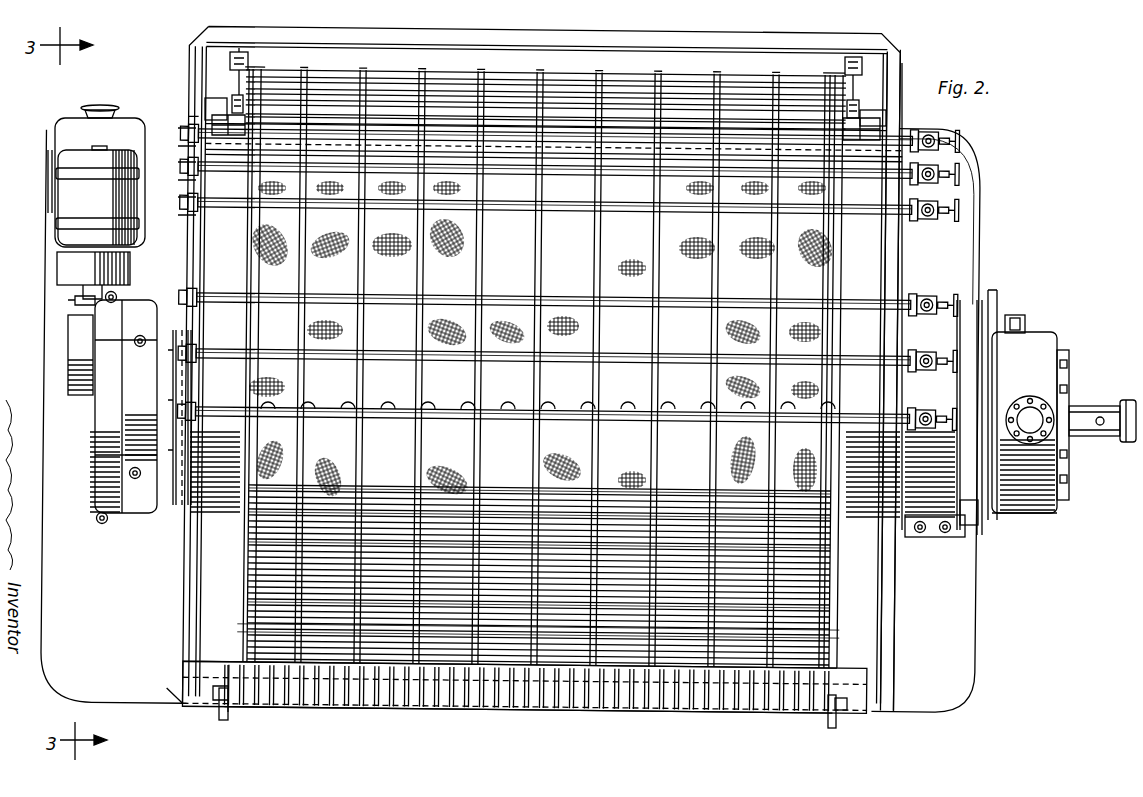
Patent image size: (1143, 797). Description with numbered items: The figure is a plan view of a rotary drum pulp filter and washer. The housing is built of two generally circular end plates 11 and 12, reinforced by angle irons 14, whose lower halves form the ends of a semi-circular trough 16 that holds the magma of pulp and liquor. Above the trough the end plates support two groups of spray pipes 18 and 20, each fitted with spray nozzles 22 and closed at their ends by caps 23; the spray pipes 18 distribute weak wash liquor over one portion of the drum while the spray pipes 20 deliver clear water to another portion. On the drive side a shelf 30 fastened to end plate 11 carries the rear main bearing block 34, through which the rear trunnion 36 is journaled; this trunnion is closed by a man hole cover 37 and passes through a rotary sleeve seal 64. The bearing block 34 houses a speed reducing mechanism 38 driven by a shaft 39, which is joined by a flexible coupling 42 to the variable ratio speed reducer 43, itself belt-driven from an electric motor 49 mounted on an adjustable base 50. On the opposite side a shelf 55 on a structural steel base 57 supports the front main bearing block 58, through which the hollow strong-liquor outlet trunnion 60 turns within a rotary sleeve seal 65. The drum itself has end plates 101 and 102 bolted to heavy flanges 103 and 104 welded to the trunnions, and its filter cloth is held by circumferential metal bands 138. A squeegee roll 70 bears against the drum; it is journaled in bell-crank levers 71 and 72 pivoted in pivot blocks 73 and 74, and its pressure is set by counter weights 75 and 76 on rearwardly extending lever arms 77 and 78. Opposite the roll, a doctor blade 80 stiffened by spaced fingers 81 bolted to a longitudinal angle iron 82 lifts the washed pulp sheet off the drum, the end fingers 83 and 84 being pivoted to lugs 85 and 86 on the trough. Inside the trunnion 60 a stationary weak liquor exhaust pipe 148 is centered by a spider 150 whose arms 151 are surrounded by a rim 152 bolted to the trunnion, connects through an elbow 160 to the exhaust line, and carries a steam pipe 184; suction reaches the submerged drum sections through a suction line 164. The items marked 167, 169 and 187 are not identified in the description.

The end plate 11 is at (192, 583).
The end plate 12 is at (870, 605).
The angle irons 14 is at (182, 568).
The trough 16 is at (222, 537).
The spray pipes 18 is at (645, 140).
The spray pipes 20 is at (683, 410).
The spray nozzles 22 is at (428, 406).
The caps 23 is at (185, 205).
The shelf 30 is at (60, 408).
The rear main bearing block 34 is at (108, 455).
The man hole cover 37 is at (95, 432).
The rear trunnion 36 is at (215, 470).
The speed reducing mechanism 38 is at (78, 335).
The shaft 39 is at (74, 300).
The flexible coupling 42 is at (52, 276).
The variable ratio speed reducer 43 is at (52, 140).
The electric motor 49 is at (72, 194).
The adjustable base 50 is at (65, 128).
The shelf 55 is at (965, 540).
The structural steel base 57 is at (960, 665).
The front main bearing block 58 is at (950, 330).
The strong-liquor outlet trunnion 60 is at (1030, 396).
The rotary sleeve seal 64 is at (158, 526).
The rotary sleeve seal 65 is at (903, 537).
The squeegee roll 70 is at (546, 98).
The bell-crank lever 71 is at (845, 108).
The bell-crank lever 72 is at (242, 108).
The pivot block 73 is at (874, 112).
The pivot block 74 is at (215, 100).
The counter weight 75 is at (848, 58).
The counter weight 76 is at (248, 56).
The lever arm 77 is at (840, 80).
The lever arm 78 is at (232, 80).
The doctor blade 80 is at (492, 700).
The fingers 81 is at (595, 702).
The longitudinal angle iron 82 is at (620, 722).
The end finger 83 is at (828, 722).
The end finger 84 is at (232, 718).
The lug 85 is at (845, 705).
The lug 86 is at (214, 693).
The drum end plate 101 is at (232, 630).
The drum end plate 102 is at (833, 634).
The flange 103 is at (228, 492).
The flange 104 is at (845, 535).
The circumferential metal bands 138 is at (520, 257).
The weak liquor exhaust pipe 148 is at (1085, 406).
The spider 150 is at (1057, 510).
The arms 151 is at (1010, 325).
The rim 152 is at (980, 525).
The elbow 160 is at (1113, 448).
The suction line 164 is at (1053, 340).
The block 167 is at (1020, 315).
The plate 169 is at (990, 312).
The pipe 184 is at (1100, 412).
The bearing 187 is at (1068, 375).